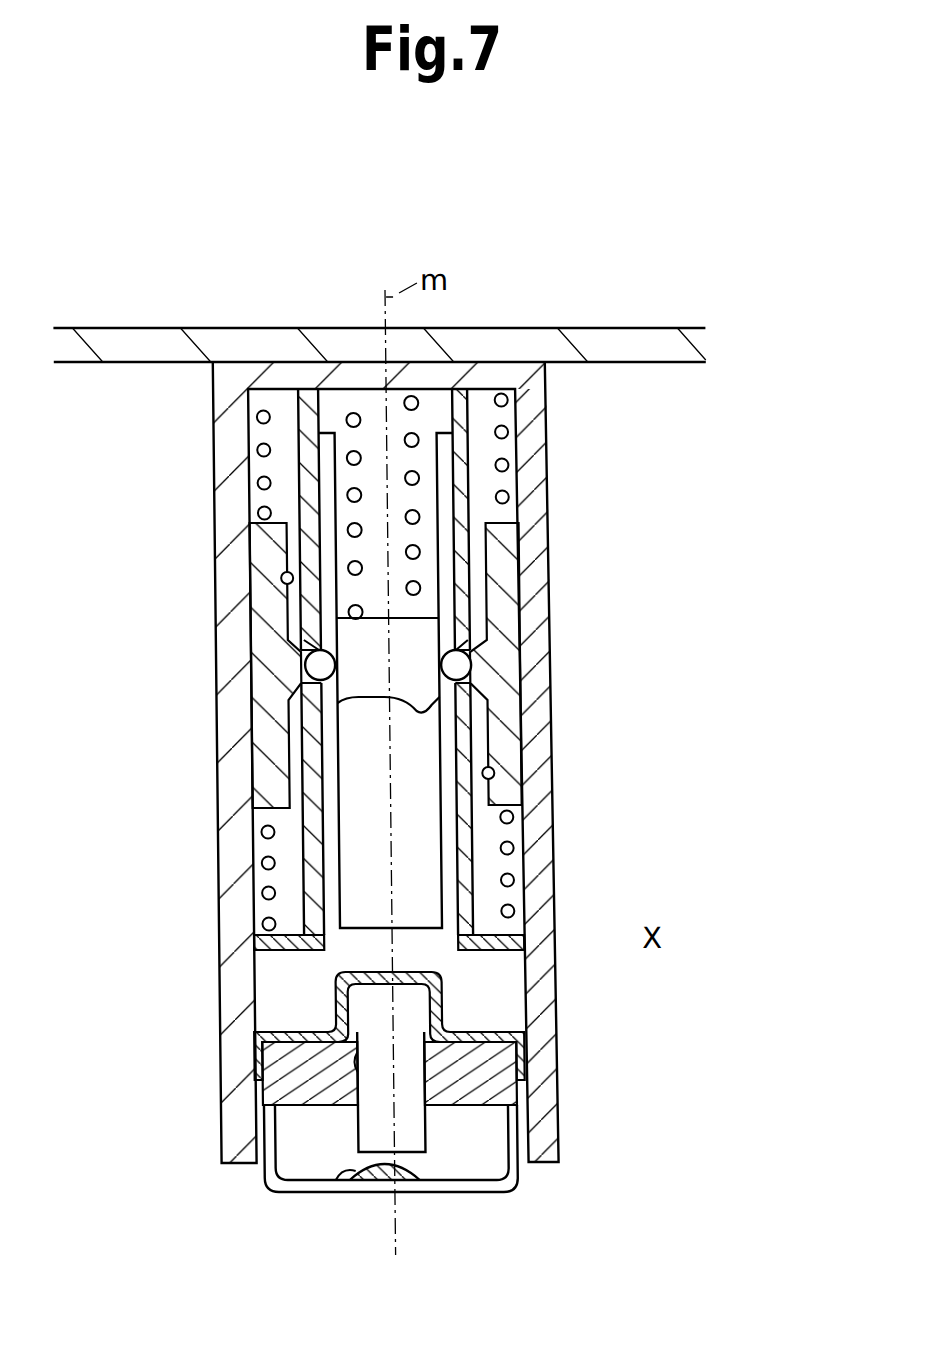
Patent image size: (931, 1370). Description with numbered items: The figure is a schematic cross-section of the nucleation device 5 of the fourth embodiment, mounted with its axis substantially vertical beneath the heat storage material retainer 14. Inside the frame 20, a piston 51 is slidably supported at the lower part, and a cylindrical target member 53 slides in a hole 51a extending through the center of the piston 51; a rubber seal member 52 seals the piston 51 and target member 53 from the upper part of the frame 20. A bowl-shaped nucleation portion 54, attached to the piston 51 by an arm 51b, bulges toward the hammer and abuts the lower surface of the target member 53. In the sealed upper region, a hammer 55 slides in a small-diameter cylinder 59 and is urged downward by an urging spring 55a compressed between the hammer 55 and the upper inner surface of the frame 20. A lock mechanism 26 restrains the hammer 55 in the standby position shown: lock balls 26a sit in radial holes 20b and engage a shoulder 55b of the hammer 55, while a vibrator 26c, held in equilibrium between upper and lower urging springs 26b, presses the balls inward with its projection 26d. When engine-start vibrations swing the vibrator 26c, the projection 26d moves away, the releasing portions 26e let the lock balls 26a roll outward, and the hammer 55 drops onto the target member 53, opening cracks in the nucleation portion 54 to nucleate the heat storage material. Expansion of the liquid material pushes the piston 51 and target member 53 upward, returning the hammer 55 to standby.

The nucleation device 5 is at (245, 1205).
The heat storage material retainer 14 is at (641, 326).
The frame 20 is at (546, 392).
The holes 20b is at (468, 663).
The lock mechanism 26 is at (485, 400).
The lock balls 26a is at (467, 663).
The urging springs 26b is at (506, 470).
The vibrator 26c is at (504, 543).
The projection 26d is at (308, 650).
The releasing portions 26e is at (283, 578).
The piston 51 is at (514, 1100).
The hole 51a is at (360, 1063).
The arm 51b is at (515, 1180).
The seal member 52 is at (386, 977).
The target member 53 is at (418, 1138).
The nucleation portion 54 is at (358, 1168).
The hammer 55 is at (341, 808).
The urging spring 55a is at (345, 421).
The shoulder 55b is at (466, 657).
The cylinder 59 is at (469, 455).